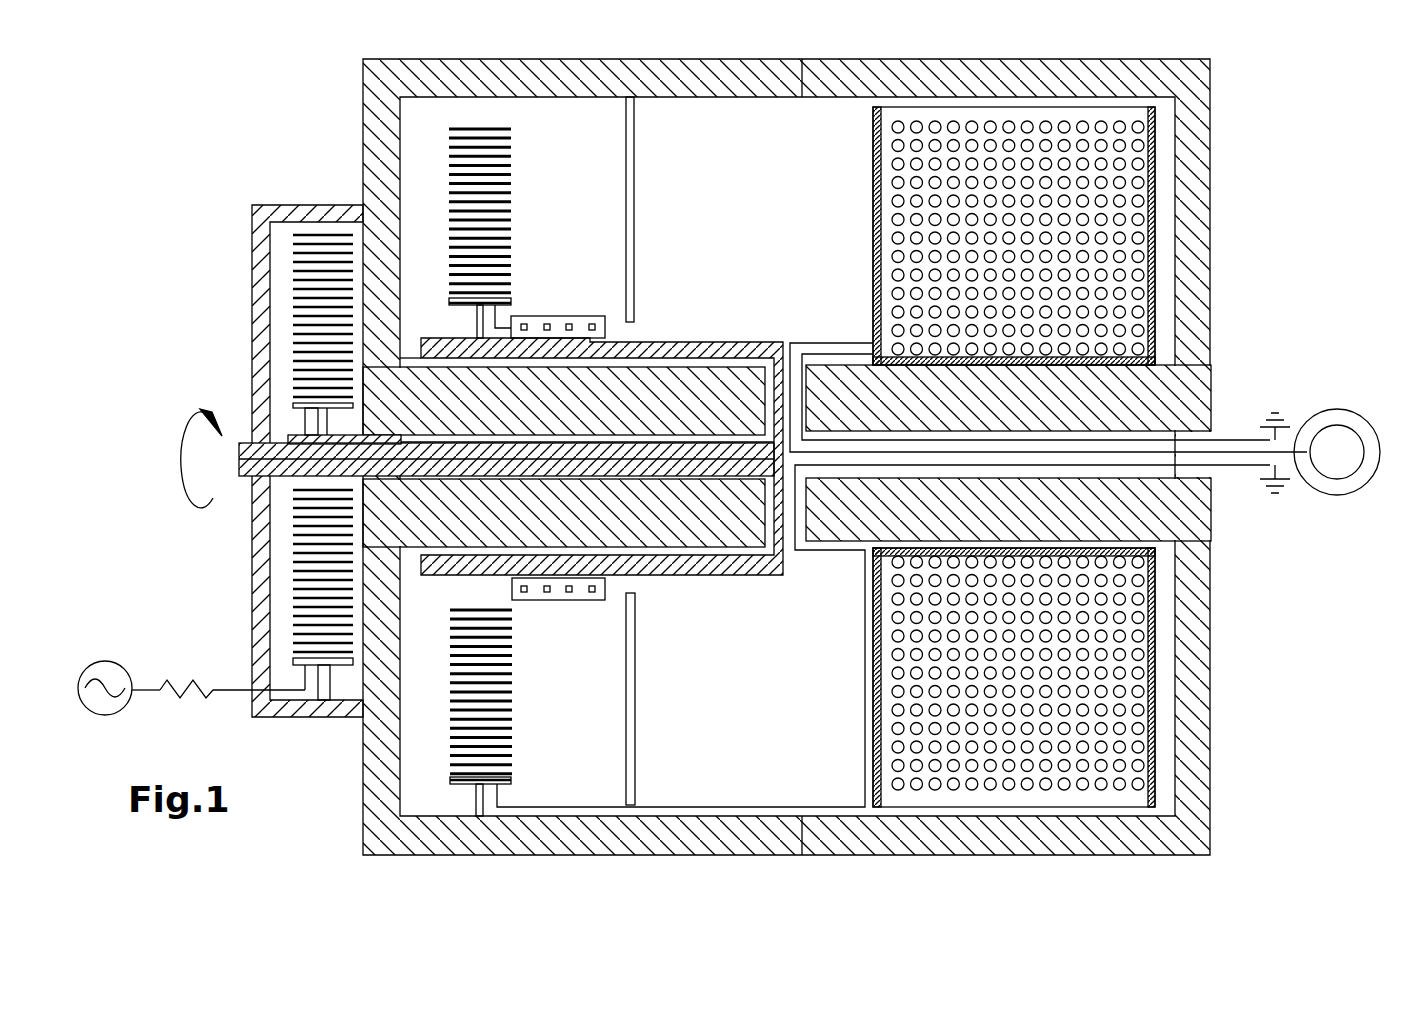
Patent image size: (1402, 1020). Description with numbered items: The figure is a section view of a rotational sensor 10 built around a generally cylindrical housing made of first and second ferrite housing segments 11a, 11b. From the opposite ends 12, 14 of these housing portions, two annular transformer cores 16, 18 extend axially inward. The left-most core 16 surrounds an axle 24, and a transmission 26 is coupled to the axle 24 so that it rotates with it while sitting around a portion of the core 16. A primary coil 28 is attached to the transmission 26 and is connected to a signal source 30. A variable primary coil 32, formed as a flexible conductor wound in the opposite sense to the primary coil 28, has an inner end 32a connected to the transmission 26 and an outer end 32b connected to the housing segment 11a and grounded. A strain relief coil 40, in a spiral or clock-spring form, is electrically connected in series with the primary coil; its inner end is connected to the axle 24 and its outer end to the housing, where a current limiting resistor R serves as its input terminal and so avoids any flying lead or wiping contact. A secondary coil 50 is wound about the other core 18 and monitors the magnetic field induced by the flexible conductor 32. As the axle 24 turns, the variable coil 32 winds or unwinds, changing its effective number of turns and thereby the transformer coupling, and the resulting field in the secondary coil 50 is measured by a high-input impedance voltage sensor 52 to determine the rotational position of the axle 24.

The rotational sensor 10 is at (280, 115).
The first ferrite housing segment 11a is at (530, 63).
The second ferrite housing segment 11b is at (957, 63).
The housing end 12 is at (362, 758).
The housing end 14 is at (1213, 675).
The annular transformer core 16 is at (698, 385).
The annular transformer core 18 is at (860, 528).
The axle 24 is at (243, 480).
The transmission 26 is at (670, 338).
The primary coil 28 is at (573, 317).
The signal source 30 is at (92, 661).
The variable primary coil 32 is at (513, 212).
The inner end of flexible conductor 32a is at (513, 302).
The outer end of flexible conductor 32b is at (511, 783).
The strain relief coil 40 is at (293, 308).
The secondary coil 50 is at (1022, 122).
The high-input impedance voltage sensor 52 is at (1330, 430).
The current limiting resistor R is at (176, 686).